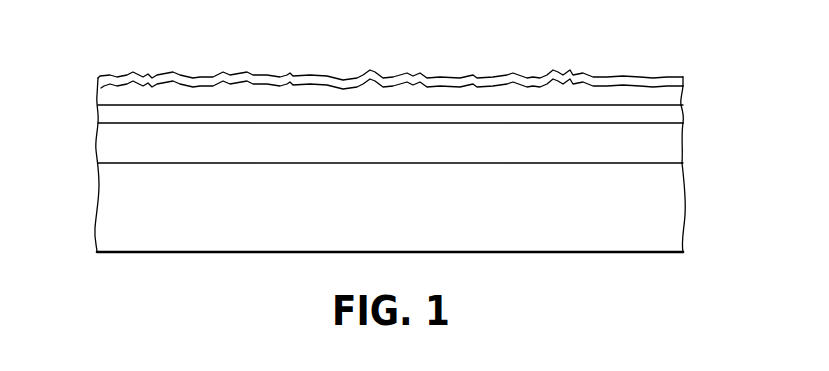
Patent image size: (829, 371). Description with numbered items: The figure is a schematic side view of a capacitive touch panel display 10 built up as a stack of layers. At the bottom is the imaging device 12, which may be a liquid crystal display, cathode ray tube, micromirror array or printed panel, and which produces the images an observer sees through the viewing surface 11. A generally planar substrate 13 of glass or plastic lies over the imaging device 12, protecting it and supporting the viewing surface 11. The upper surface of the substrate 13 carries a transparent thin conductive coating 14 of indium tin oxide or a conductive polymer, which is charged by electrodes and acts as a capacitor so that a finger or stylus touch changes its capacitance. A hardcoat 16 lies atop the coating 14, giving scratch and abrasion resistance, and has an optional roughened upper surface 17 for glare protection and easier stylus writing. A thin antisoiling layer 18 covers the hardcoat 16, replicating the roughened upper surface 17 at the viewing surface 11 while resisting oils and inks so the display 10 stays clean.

The capacitive touch panel display 10 is at (600, 47).
The viewing surface 11 is at (190, 78).
The imaging device 12 is at (670, 207).
The substrate 13 is at (673, 143).
The transparent thin conductive coating 14 is at (673, 116).
The hardcoat 16 is at (670, 97).
The roughened upper surface 17 is at (98, 94).
The antisoiling layer 18 is at (681, 79).